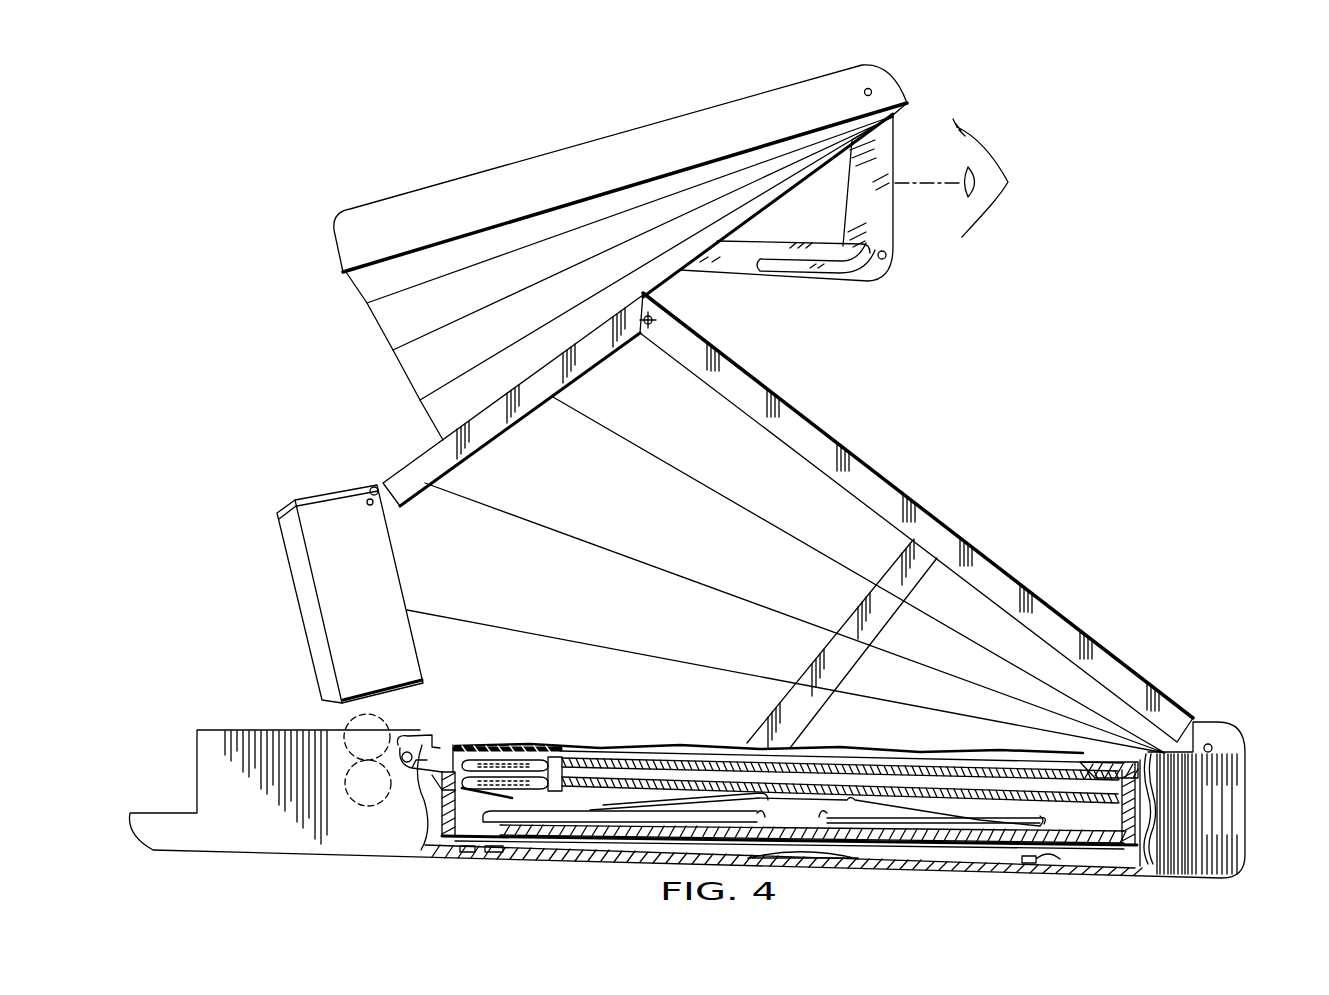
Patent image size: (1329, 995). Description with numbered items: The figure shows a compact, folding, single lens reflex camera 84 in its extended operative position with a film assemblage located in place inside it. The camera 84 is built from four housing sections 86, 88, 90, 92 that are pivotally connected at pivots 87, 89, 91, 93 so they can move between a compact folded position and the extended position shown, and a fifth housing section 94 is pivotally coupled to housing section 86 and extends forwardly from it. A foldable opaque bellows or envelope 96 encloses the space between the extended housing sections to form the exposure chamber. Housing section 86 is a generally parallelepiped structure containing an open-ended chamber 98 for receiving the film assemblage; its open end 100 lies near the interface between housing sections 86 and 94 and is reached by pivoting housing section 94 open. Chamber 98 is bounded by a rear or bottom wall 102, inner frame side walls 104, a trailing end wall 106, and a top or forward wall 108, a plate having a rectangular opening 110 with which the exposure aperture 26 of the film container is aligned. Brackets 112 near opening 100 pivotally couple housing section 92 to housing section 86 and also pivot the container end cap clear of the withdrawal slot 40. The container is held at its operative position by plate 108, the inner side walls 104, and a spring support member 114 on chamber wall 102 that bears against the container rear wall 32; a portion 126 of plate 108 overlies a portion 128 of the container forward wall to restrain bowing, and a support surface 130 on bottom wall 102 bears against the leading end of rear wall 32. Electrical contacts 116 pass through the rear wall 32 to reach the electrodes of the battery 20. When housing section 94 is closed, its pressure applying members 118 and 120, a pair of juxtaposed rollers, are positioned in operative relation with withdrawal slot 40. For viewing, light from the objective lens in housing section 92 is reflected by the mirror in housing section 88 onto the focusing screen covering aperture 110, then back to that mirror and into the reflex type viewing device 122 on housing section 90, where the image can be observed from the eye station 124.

The reflex type viewing device 122 is at (620, 168).
The eye station 124 is at (950, 136).
The camera 84 is at (749, 271).
The pivot 89 is at (656, 318).
The housing section 90 is at (501, 400).
The pivot 91 is at (375, 486).
The housing section 92 is at (323, 487).
The bellows 96 is at (592, 612).
The housing section 88 is at (962, 517).
The pivot 87 is at (1210, 744).
The housing section 86 is at (687, 826).
The fifth housing section 94 is at (217, 855).
The trailing end wall 106 is at (1247, 806).
The pressure applying member 118 is at (345, 728).
The pressure applying member 120 is at (384, 802).
The pivot 93 is at (412, 738).
The bracket 112 is at (428, 740).
The withdrawal slot 40 is at (450, 758).
The open end 100 is at (440, 852).
The exposure aperture 26 is at (600, 750).
The top or forward wall 108 is at (522, 750).
The portion of plate 126 is at (495, 748).
The portion of forward wall 128 is at (512, 745).
The rectangular opening 110 is at (554, 752).
The chamber 98 is at (905, 853).
The electrical battery 20 is at (566, 845).
The rear wall 32 is at (604, 848).
The rear or bottom wall 102 is at (942, 872).
The spring support member 114 is at (835, 862).
The electrical contact 116 is at (1040, 865).
The support surface 130 is at (498, 852).
The inner frame side wall 104 is at (1146, 862).